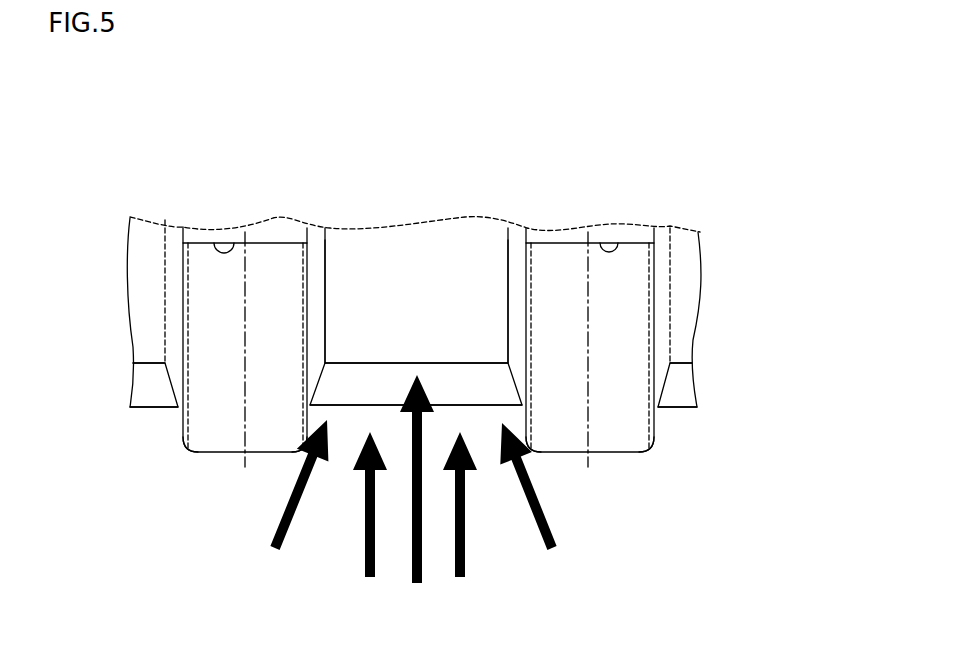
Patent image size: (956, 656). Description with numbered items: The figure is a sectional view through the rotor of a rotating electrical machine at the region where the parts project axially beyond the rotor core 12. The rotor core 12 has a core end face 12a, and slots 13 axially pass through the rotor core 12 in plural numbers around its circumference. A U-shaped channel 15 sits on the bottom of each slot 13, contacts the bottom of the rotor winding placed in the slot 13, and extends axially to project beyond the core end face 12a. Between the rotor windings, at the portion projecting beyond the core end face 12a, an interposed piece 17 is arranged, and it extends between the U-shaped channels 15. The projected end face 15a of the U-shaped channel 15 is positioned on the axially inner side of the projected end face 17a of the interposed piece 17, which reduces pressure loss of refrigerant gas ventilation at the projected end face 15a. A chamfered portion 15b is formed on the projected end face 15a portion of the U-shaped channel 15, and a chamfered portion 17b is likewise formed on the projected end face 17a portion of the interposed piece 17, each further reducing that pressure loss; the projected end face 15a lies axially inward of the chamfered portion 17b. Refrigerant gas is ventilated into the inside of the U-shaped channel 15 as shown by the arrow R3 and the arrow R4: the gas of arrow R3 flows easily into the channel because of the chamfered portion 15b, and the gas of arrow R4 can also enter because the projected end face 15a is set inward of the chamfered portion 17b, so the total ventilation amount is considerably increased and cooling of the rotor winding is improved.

The rotor core 12 is at (570, 232).
The core end face 12a is at (235, 243).
The slot 13 is at (183, 238).
The U-shaped channel 15 is at (133, 345).
The projected end face 15a is at (158, 407).
The chamfered portion 15b is at (368, 385).
The interposed piece 17 is at (237, 410).
The projected end face 17a is at (240, 452).
The chamfered portion 17b is at (188, 447).
The arrow R3 is at (455, 553).
The arrow R4 is at (290, 460).